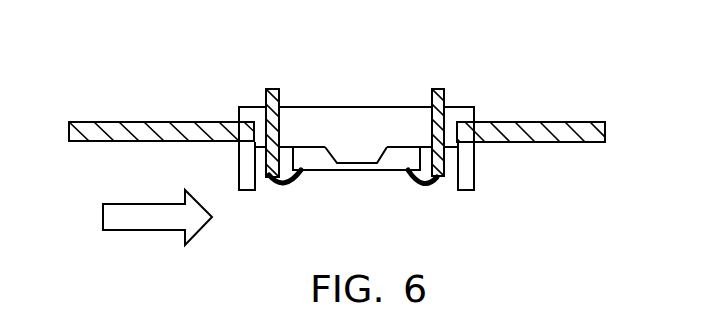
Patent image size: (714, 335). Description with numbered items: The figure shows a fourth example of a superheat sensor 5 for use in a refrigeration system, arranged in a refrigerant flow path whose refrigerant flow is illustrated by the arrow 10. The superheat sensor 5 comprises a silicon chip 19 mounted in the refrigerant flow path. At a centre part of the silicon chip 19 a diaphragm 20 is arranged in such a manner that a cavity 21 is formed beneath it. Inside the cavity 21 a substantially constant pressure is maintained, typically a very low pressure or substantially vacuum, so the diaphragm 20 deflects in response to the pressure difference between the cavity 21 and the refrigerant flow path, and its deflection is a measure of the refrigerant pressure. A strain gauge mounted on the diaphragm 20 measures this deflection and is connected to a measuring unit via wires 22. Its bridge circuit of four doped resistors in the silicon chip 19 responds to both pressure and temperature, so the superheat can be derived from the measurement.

The superheat sensor 5 is at (494, 73).
The arrow 10 is at (134, 218).
The silicon chip 19 is at (395, 120).
The diaphragm 20 is at (347, 172).
The cavity 21 is at (347, 150).
The wires 22 is at (287, 183).